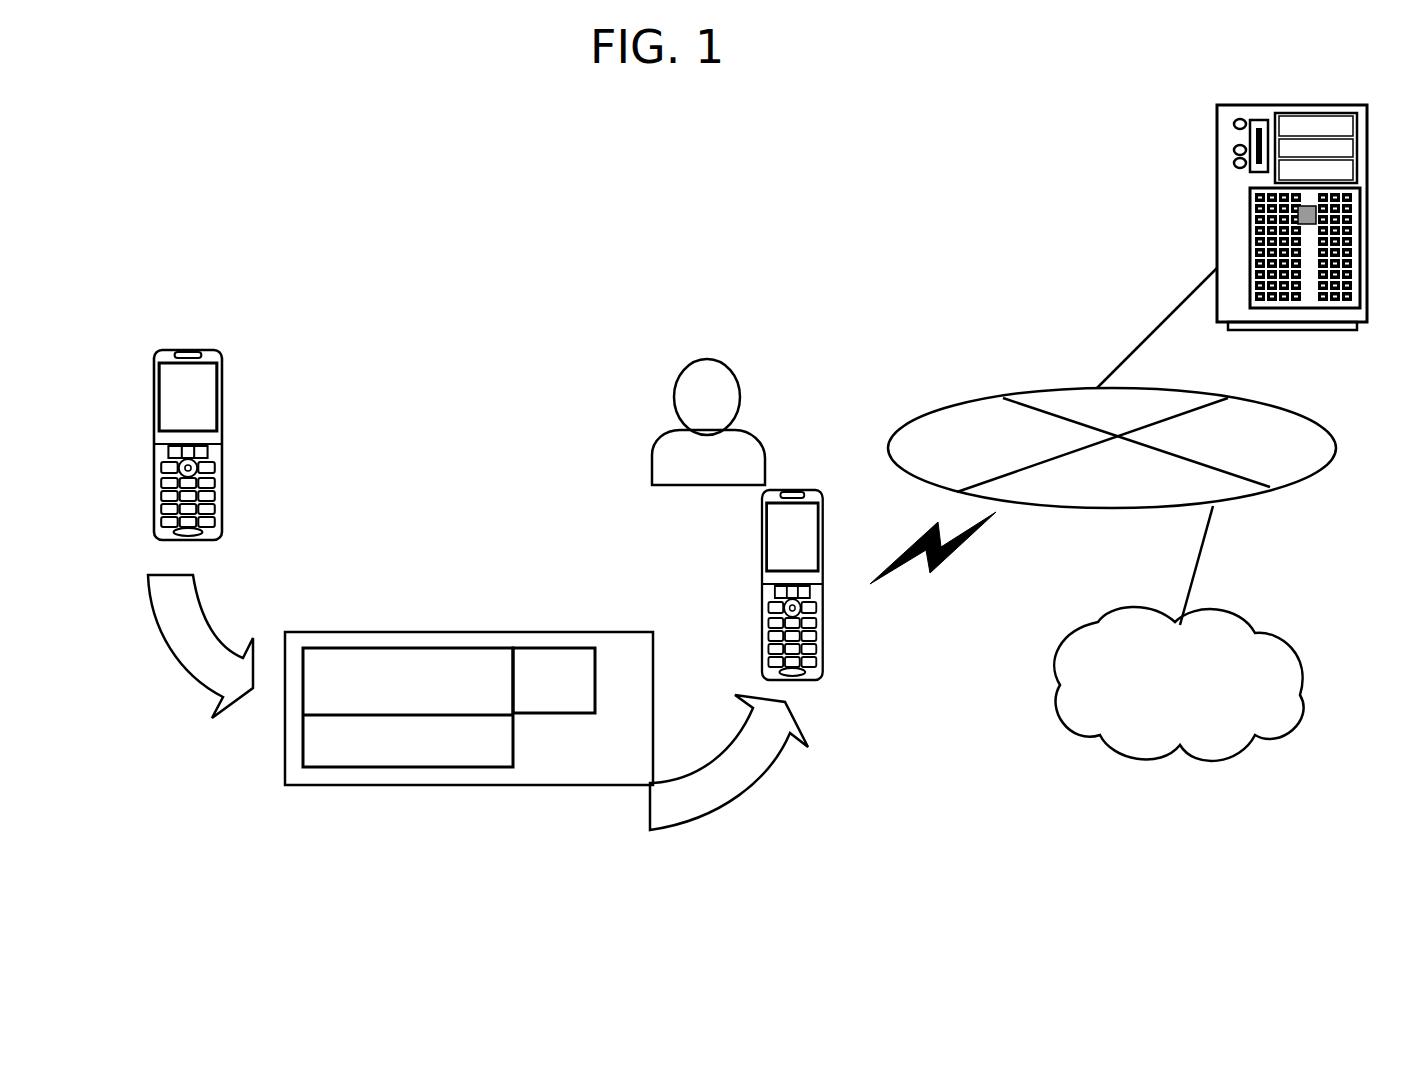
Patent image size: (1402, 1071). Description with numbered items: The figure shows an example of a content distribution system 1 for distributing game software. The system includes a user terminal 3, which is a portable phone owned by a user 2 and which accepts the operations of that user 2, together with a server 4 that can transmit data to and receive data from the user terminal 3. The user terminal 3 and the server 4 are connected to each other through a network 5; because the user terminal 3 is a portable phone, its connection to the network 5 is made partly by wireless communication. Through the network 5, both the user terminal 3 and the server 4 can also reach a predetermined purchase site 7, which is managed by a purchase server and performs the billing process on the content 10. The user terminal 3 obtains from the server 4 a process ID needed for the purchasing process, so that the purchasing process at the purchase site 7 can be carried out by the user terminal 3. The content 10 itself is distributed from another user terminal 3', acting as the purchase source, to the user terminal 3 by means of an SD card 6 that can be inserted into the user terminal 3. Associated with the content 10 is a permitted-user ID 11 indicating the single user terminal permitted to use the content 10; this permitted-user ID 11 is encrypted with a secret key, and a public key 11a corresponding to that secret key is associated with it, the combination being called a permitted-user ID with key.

The content distribution system 1 is at (872, 164).
The user 2 is at (677, 375).
The user terminal 3 is at (845, 596).
The another user terminal 3' is at (241, 445).
The server 4 is at (1217, 132).
The network 5 is at (937, 410).
The SD card 6 is at (469, 705).
The purchase site 7 is at (1288, 722).
The content 10 is at (513, 767).
The permitted-user ID 11 is at (473, 647).
The public key 11a is at (580, 647).